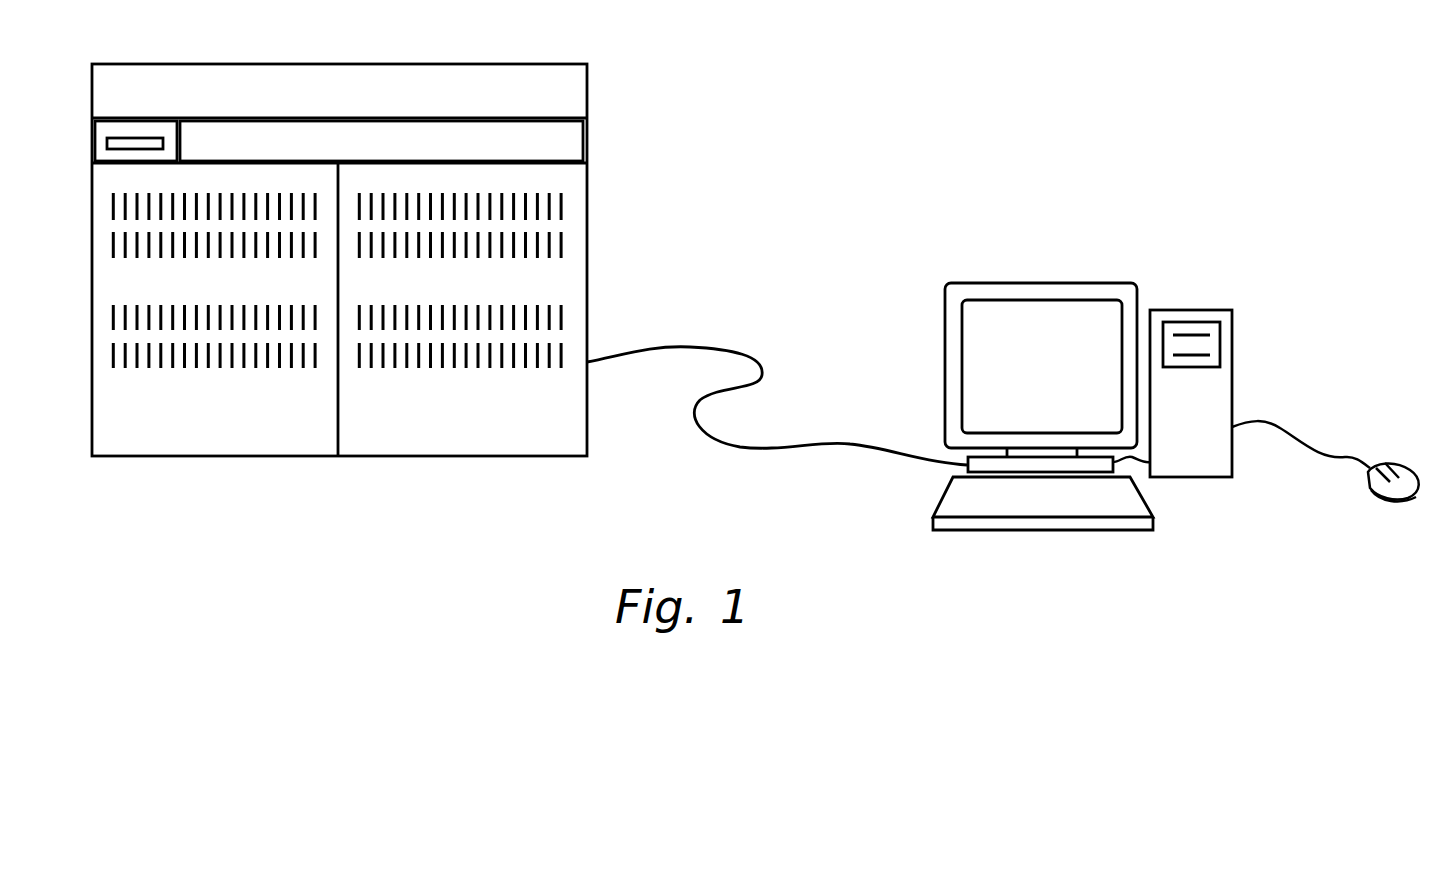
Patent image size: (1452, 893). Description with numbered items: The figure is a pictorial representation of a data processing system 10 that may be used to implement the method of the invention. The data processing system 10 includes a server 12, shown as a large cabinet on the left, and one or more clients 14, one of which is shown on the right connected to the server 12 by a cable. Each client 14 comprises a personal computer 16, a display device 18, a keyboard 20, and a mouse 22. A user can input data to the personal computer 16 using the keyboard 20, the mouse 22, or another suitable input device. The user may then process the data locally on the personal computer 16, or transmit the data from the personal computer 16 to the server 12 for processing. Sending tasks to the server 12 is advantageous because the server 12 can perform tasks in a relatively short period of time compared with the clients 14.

The data processing system 10 is at (760, 176).
The server 12 is at (587, 222).
The client 14 is at (1152, 557).
The personal computer 16 is at (1232, 322).
The display device 18 is at (1110, 283).
The keyboard 20 is at (945, 531).
The mouse 22 is at (1398, 466).